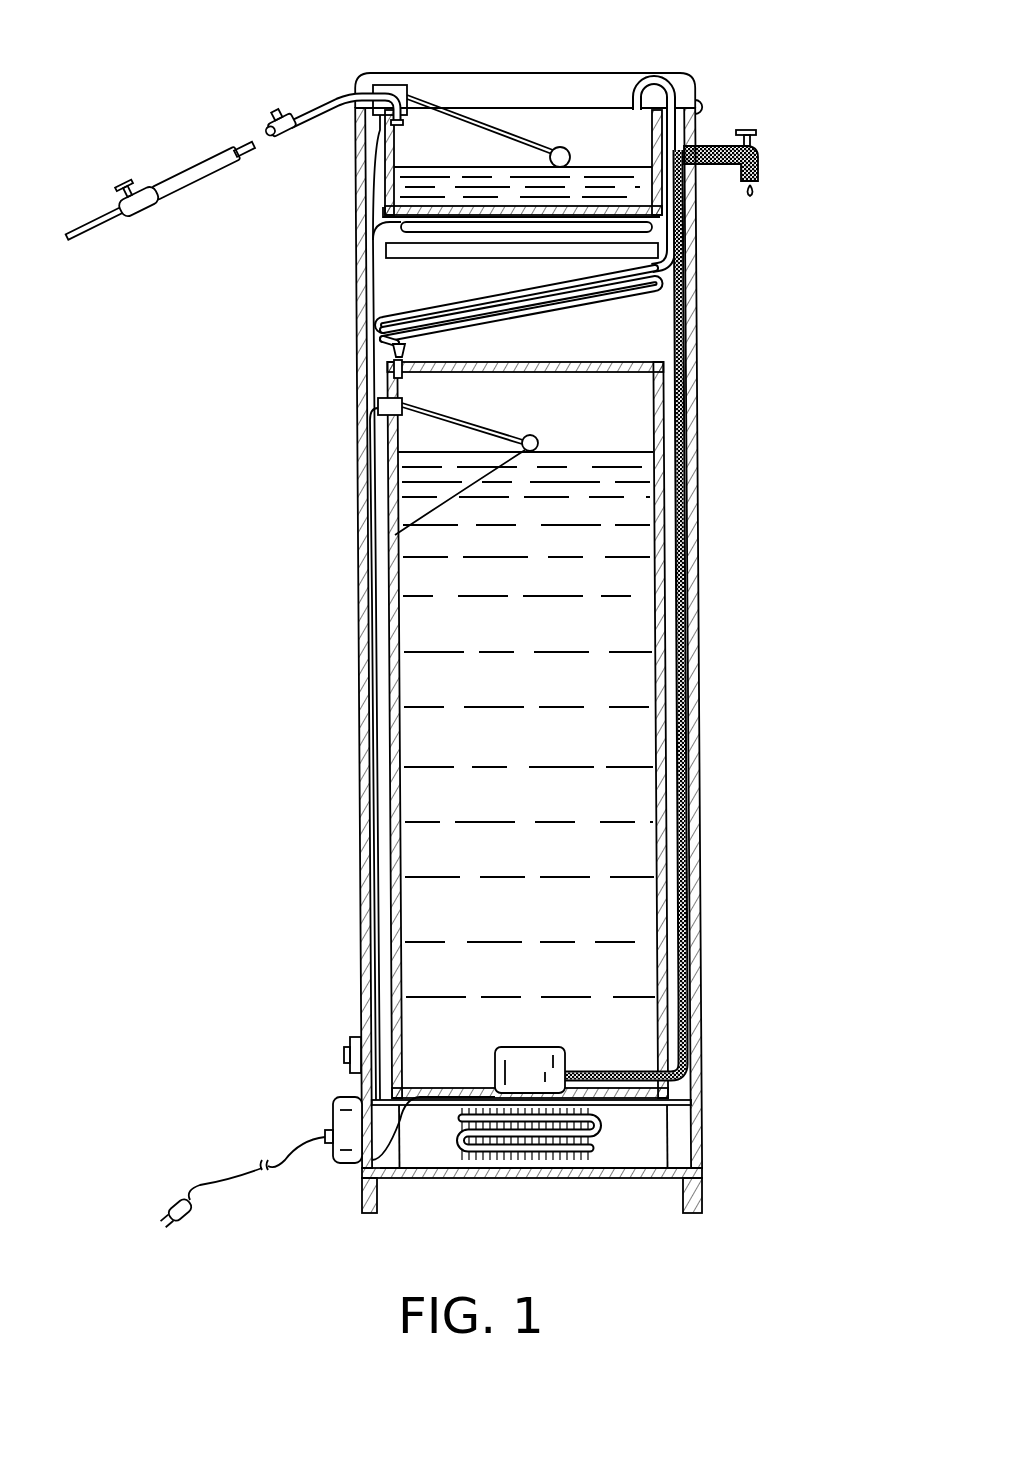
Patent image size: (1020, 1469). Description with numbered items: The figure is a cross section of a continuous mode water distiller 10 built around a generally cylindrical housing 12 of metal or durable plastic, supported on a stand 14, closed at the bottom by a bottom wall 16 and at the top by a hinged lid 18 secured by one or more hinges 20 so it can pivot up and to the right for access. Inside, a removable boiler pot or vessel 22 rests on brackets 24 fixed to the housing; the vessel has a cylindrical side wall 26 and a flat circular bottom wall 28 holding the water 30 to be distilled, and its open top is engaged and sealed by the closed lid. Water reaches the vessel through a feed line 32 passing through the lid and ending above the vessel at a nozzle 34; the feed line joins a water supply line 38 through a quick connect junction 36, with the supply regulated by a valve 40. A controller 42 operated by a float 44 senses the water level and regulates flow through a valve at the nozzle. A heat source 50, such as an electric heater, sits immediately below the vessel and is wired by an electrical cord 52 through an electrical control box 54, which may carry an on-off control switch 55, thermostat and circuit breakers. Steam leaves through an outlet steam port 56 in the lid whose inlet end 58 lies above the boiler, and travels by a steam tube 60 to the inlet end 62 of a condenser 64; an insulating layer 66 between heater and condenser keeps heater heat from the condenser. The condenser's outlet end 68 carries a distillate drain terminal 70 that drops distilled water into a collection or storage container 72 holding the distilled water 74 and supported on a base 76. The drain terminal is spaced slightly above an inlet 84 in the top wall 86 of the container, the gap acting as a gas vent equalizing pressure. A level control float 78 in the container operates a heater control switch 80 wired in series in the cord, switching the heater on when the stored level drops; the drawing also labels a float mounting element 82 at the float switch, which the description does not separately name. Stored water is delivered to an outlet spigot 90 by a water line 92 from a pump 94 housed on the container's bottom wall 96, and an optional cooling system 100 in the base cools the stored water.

The continuous mode water distiller 10 is at (742, 391).
The housing 12 is at (697, 560).
The stand 14 is at (700, 1207).
The bottom wall 16 is at (590, 1180).
The hinged lid 18 is at (505, 72).
The hinge 20 is at (704, 104).
The boiler pot or vessel 22 is at (386, 176).
The brackets 24 is at (388, 252).
The cylindrical side wall 26 is at (386, 167).
The flat circular bottom wall 28 is at (400, 226).
The water 30 is at (665, 212).
The feed line 32 is at (345, 100).
The nozzle 34 is at (400, 124).
The quick connect junction 36 is at (278, 112).
The water supply line 38 is at (208, 165).
The valve 40 is at (128, 182).
The controller 42 is at (395, 84).
The float 44 is at (562, 146).
The heat source 50 is at (676, 240).
The electrical cord 52 is at (372, 592).
The electrical control box 54 is at (340, 1108).
The on-off control switch 55 is at (348, 1050).
The outlet steam port 56 is at (675, 86).
The inlet end 58 is at (637, 96).
The steam tube 60 is at (680, 126).
The inlet end 62 is at (660, 289).
The condenser 64 is at (378, 320).
The insulating layer 66 is at (664, 268).
The outlet end 68 is at (393, 352).
The distillate drain terminal 70 is at (408, 346).
The collection or storage container 72 is at (664, 455).
The distilled water 74 is at (405, 737).
The base 76 is at (440, 1172).
The level control float 78 is at (395, 535).
The heater control switch 80 is at (378, 416).
The float switch 82 is at (379, 412).
The inlet 84 is at (405, 380).
The top wall 86 is at (556, 366).
The outlet spigot 90 is at (760, 160).
The water line 92 is at (686, 748).
The pump 94 is at (548, 1050).
The bottom wall 96 is at (430, 1090).
The cooling system 100 is at (530, 1160).